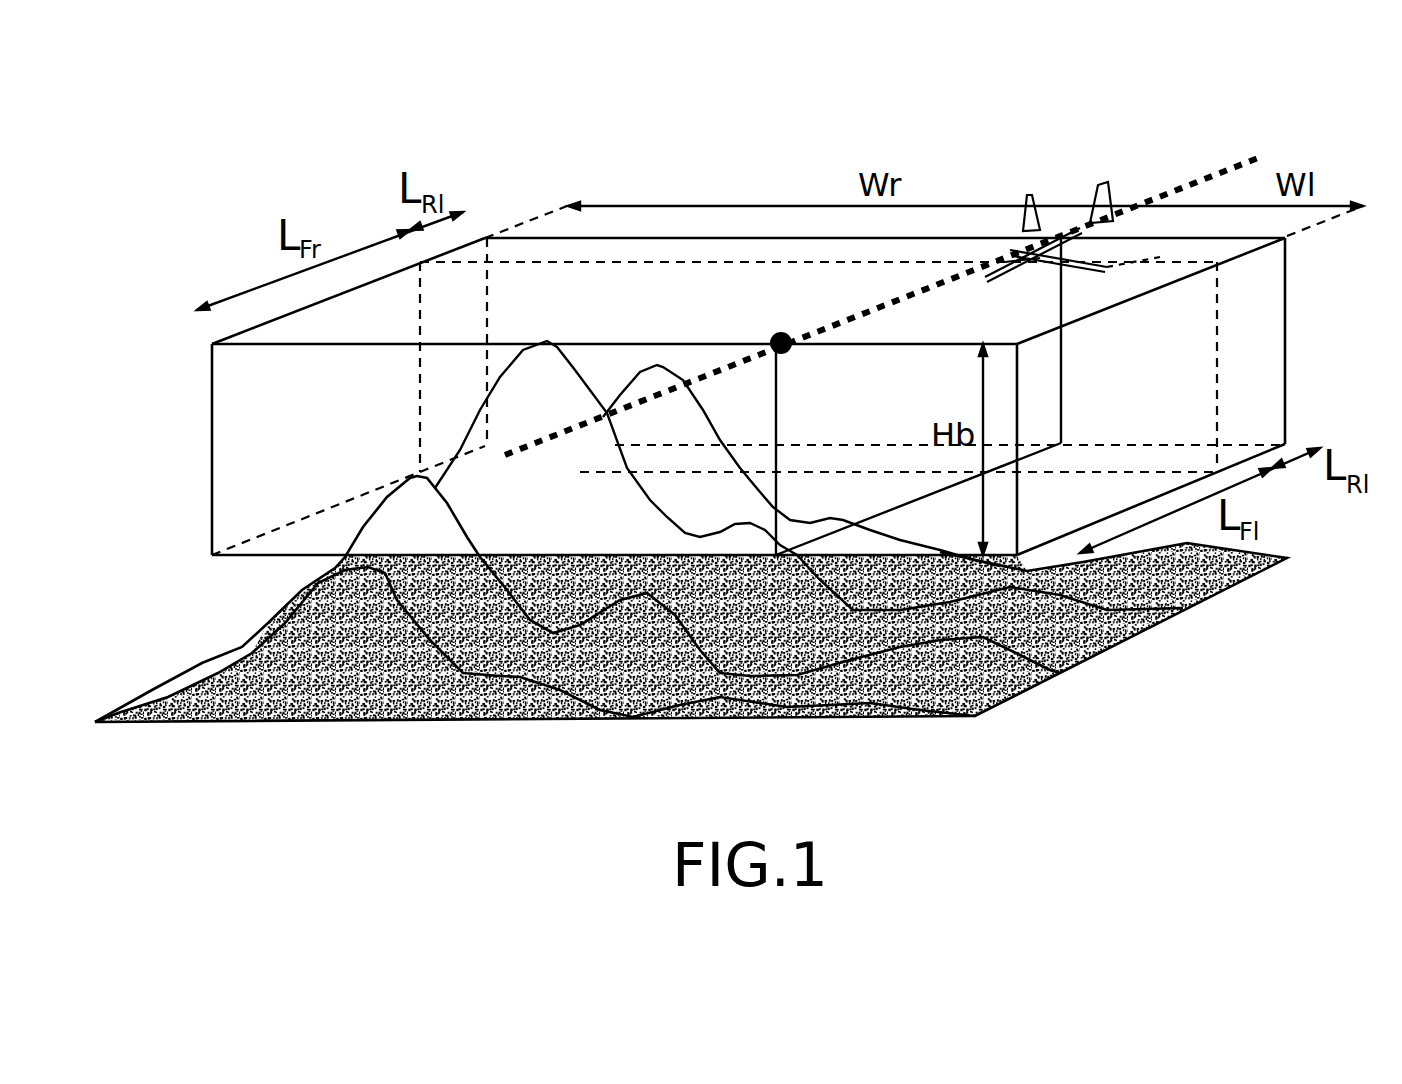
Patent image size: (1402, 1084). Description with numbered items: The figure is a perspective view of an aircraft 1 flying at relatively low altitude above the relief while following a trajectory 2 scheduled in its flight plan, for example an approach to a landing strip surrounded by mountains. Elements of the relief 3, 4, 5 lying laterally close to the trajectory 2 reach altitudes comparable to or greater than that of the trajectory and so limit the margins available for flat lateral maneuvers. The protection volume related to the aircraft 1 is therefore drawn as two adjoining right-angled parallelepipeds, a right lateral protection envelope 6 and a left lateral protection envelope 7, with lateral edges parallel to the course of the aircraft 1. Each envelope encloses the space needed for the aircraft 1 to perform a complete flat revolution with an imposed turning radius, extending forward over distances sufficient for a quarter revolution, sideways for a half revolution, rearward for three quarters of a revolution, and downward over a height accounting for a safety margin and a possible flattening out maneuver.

The aircraft 1 is at (1061, 235).
The trajectory 2 is at (838, 318).
The element of the relief 3 is at (400, 486).
The element of the relief 4 is at (655, 365).
The element of the relief 5 is at (539, 360).
The right lateral protection envelope 6 is at (342, 366).
The left lateral protection envelope 7 is at (1112, 377).